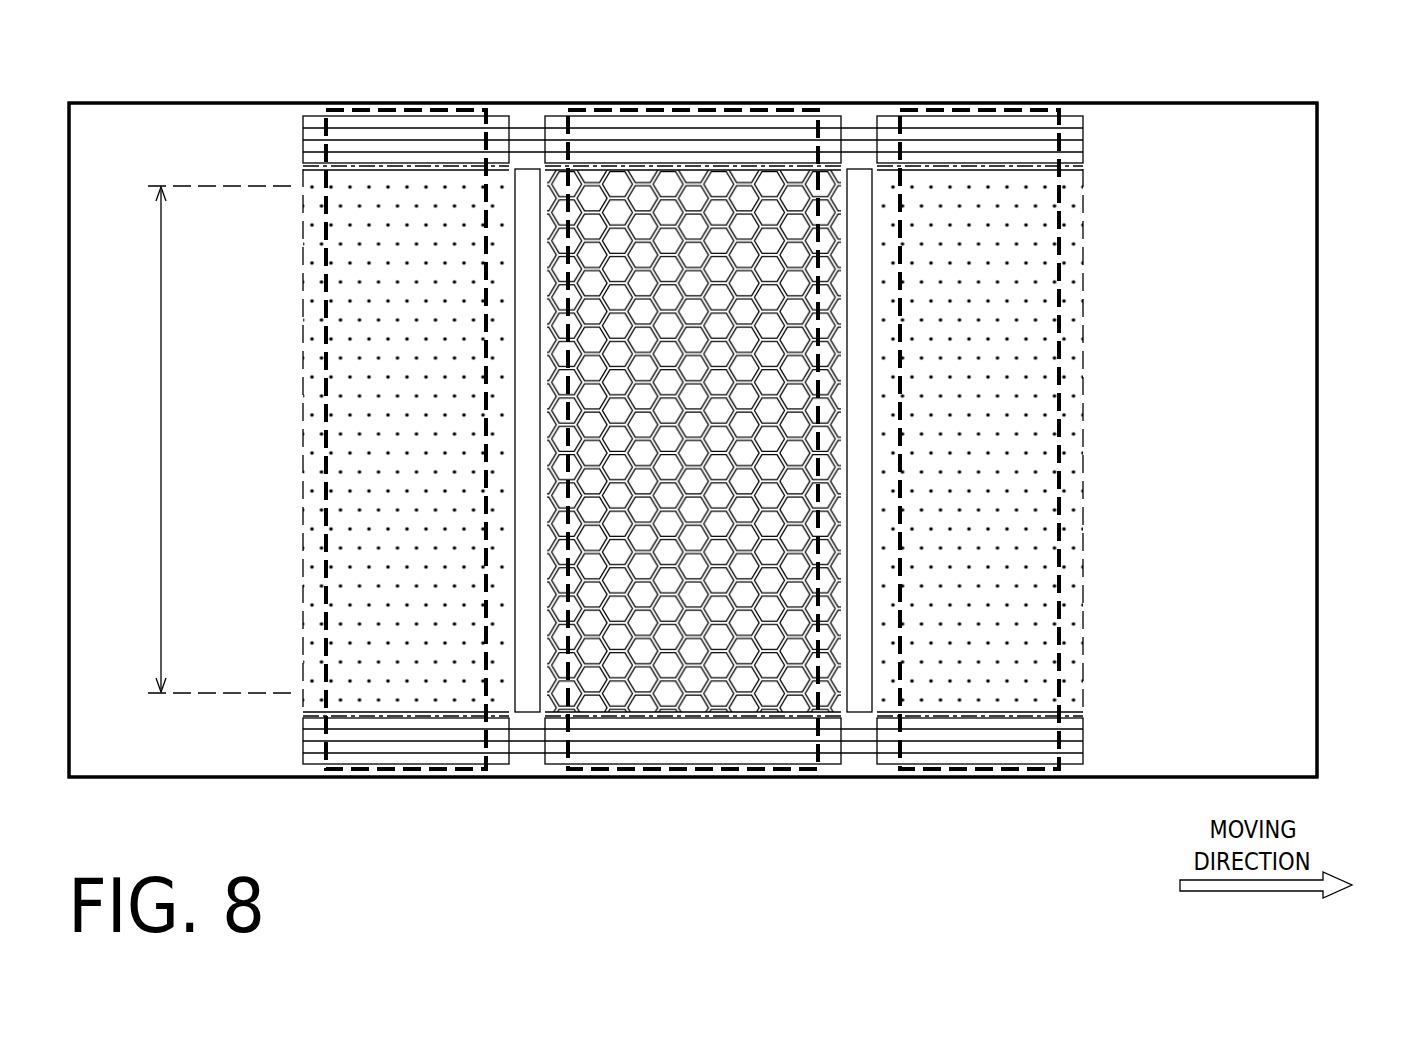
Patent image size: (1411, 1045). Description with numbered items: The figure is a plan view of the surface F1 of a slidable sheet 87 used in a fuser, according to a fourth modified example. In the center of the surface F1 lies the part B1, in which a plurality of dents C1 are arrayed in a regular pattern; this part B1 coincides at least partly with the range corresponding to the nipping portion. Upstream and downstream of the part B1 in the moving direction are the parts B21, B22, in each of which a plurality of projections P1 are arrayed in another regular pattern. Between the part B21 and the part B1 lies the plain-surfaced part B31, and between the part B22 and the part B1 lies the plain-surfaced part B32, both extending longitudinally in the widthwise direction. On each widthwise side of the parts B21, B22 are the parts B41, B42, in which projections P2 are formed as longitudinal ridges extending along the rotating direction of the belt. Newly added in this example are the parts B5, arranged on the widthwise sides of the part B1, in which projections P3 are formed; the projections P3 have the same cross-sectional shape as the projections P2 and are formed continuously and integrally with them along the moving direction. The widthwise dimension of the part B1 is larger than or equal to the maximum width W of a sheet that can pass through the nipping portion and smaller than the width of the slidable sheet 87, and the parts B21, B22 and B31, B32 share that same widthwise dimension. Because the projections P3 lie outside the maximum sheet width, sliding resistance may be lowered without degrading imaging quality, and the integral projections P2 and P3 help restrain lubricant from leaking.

The surface F1 is at (1300, 260).
The slidable sheet 87 is at (1321, 372).
The projections P1 is at (350, 412).
The projections P2 is at (410, 127).
The projections P3 is at (665, 127).
The dents C1 is at (768, 183).
The part B1 is at (701, 165).
The part B21 is at (303, 473).
The part B22 is at (1083, 472).
The part B31 is at (527, 168).
The part B32 is at (858, 168).
The part B41 is at (313, 113).
The part B42 is at (1071, 113).
The part B5 is at (549, 115).
The maximum width W is at (215, 439).